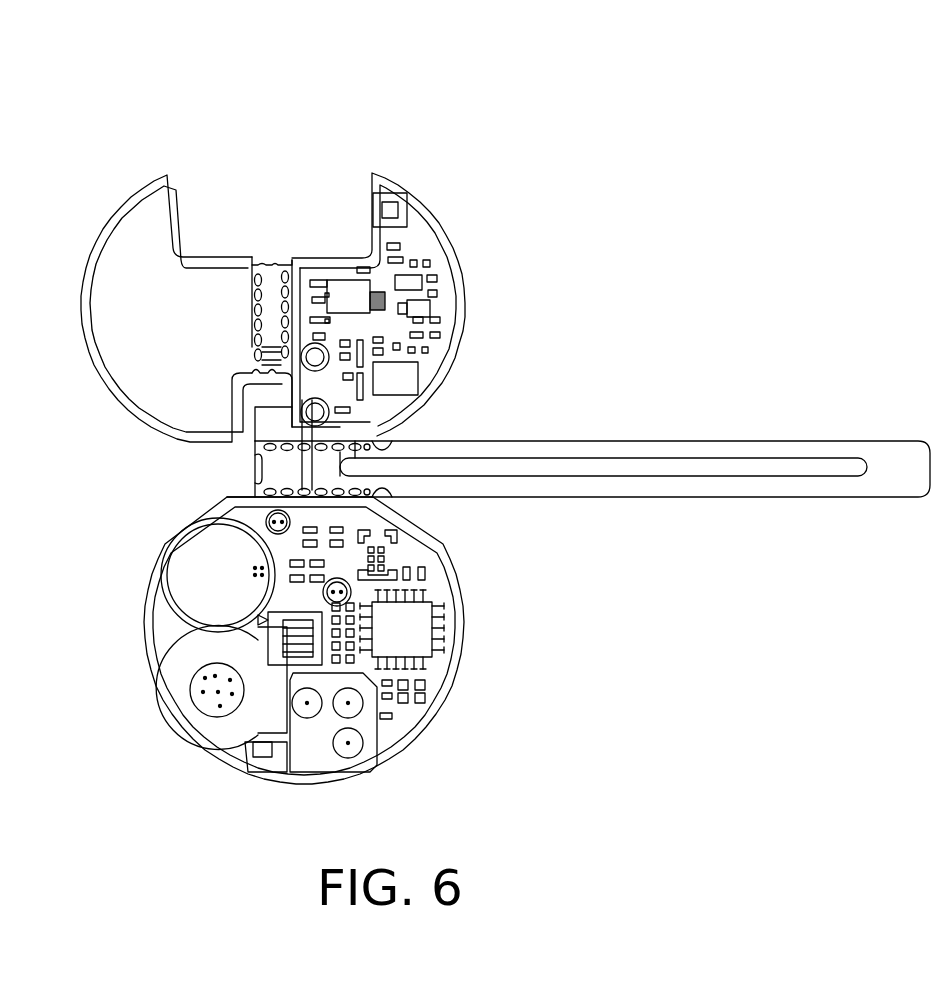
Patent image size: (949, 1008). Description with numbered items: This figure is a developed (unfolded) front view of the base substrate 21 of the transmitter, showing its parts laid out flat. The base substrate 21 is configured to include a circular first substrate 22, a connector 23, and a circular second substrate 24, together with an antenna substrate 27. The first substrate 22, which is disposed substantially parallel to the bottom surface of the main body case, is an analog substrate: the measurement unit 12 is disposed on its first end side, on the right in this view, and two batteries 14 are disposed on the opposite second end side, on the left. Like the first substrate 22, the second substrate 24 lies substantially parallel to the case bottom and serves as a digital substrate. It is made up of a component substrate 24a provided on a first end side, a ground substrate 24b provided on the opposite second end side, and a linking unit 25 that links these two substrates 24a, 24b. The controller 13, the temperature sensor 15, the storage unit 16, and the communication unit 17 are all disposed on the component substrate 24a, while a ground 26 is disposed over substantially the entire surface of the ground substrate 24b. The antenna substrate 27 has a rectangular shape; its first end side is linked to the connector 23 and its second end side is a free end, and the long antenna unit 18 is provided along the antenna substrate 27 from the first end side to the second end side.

The measurement unit 12 is at (410, 630).
The controller 13 is at (363, 290).
The batteries 14 is at (185, 672).
The temperature sensor 15 is at (415, 280).
The storage unit 16 is at (422, 307).
The communication unit 17 is at (410, 373).
The antenna unit 18 is at (644, 470).
The base substrate 21 is at (673, 189).
The first substrate 22 is at (481, 601).
The connector 23 is at (283, 470).
The second substrate 24 is at (370, 64).
The component substrate 24a is at (378, 178).
The ground substrate 24b is at (179, 206).
The linking unit 25 is at (275, 262).
The ground 26 is at (132, 236).
The antenna substrate 27 is at (773, 452).